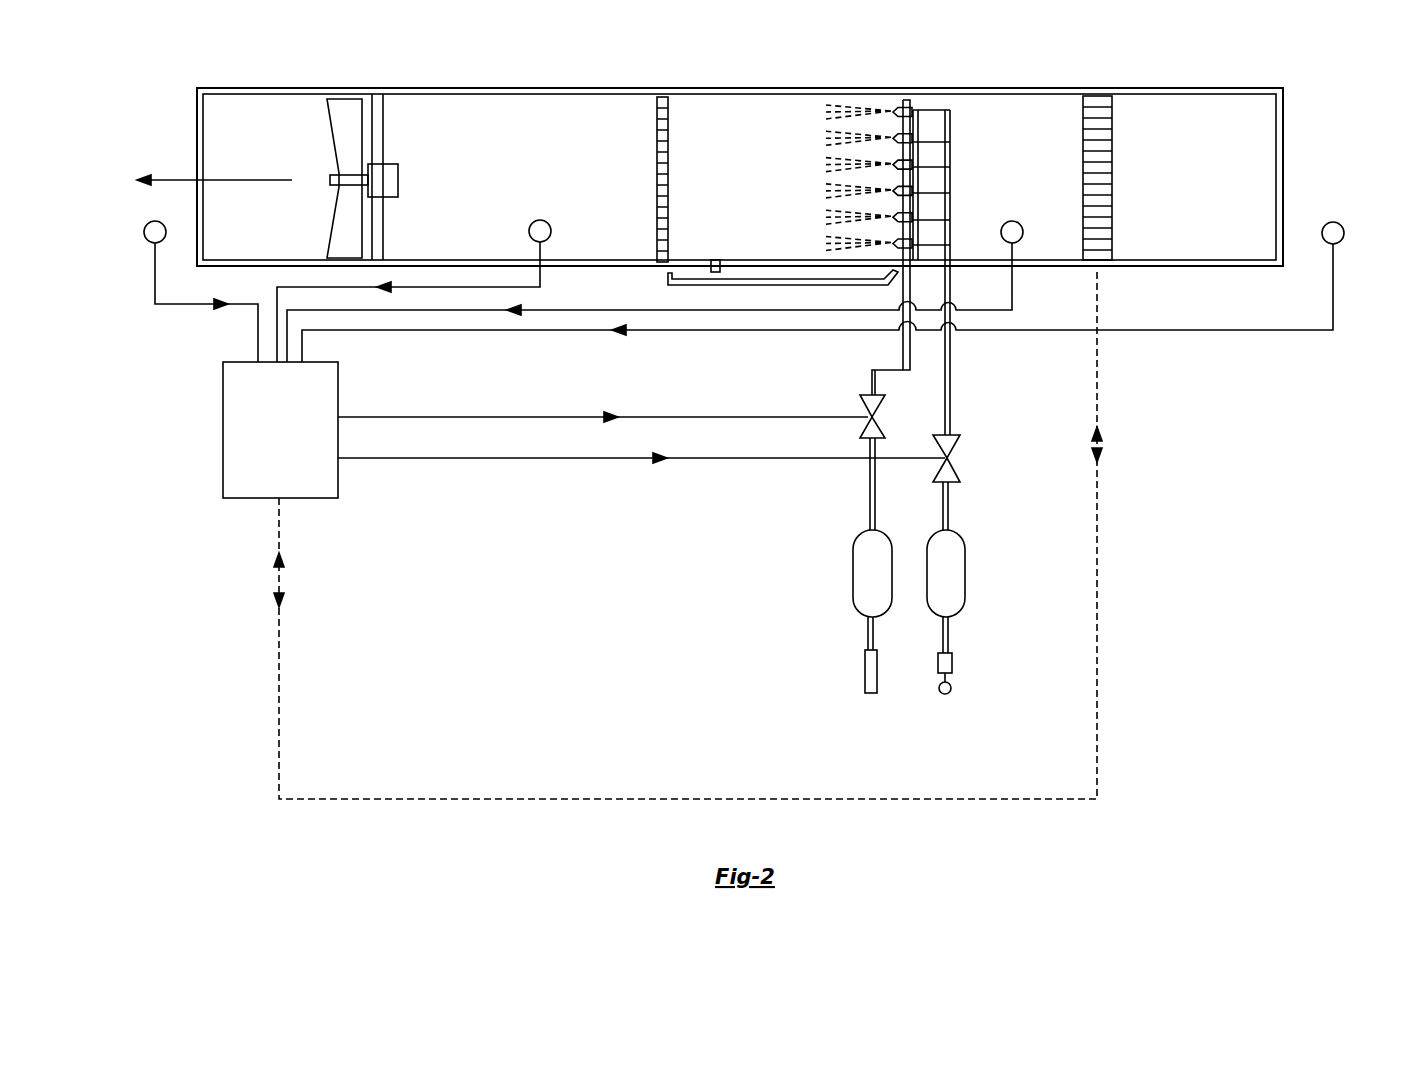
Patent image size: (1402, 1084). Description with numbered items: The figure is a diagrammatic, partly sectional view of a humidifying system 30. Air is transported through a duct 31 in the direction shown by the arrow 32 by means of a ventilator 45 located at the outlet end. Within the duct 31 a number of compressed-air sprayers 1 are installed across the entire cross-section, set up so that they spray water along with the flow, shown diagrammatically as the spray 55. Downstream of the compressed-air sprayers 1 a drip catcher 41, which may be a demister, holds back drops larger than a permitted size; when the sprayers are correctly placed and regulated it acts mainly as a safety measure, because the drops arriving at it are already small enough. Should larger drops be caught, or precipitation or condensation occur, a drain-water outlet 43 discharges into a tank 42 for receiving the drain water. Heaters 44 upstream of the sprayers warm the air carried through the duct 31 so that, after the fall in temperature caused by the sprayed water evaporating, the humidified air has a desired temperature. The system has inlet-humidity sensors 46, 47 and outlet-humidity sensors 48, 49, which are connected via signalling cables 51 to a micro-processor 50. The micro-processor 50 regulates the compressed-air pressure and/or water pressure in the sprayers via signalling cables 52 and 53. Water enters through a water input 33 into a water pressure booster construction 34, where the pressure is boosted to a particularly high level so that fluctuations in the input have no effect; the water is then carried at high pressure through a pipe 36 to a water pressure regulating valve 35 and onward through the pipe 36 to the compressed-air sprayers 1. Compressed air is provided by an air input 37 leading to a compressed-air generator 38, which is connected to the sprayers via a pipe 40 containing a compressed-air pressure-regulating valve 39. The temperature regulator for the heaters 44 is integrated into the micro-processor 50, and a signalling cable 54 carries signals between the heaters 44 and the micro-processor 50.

The compressed-air sprayer 1 is at (901, 95).
The humidifying system 30 is at (1012, 76).
The duct 31 is at (580, 88).
The arrow 32 is at (183, 180).
The water input 33 is at (950, 630).
The water pressure booster construction 34 is at (965, 565).
The water pressure regulating valve 35 is at (960, 450).
The pipe 36 is at (948, 398).
The air input 37 is at (868, 633).
The compressed-air generator 38 is at (855, 572).
The compressed-air pressure-regulating valve 39 is at (862, 406).
The pipe 40 is at (873, 373).
The drip catcher 41 is at (663, 138).
The tank 42 is at (667, 284).
The drain-water outlet 43 is at (714, 259).
The heaters 44 is at (1100, 136).
The ventilator 45 is at (342, 112).
The inlet-humidity sensor 46 is at (1334, 222).
The inlet-humidity sensor 47 is at (1012, 221).
The outlet-humidity sensor 48 is at (144, 233).
The outlet-humidity sensor 49 is at (540, 220).
The micro-processor 50 is at (238, 443).
The signalling cables 51 is at (193, 333).
The signalling cable 52 is at (487, 416).
The signalling cable 53 is at (532, 460).
The signalling cable 54 is at (643, 799).
The spray 55 is at (872, 110).